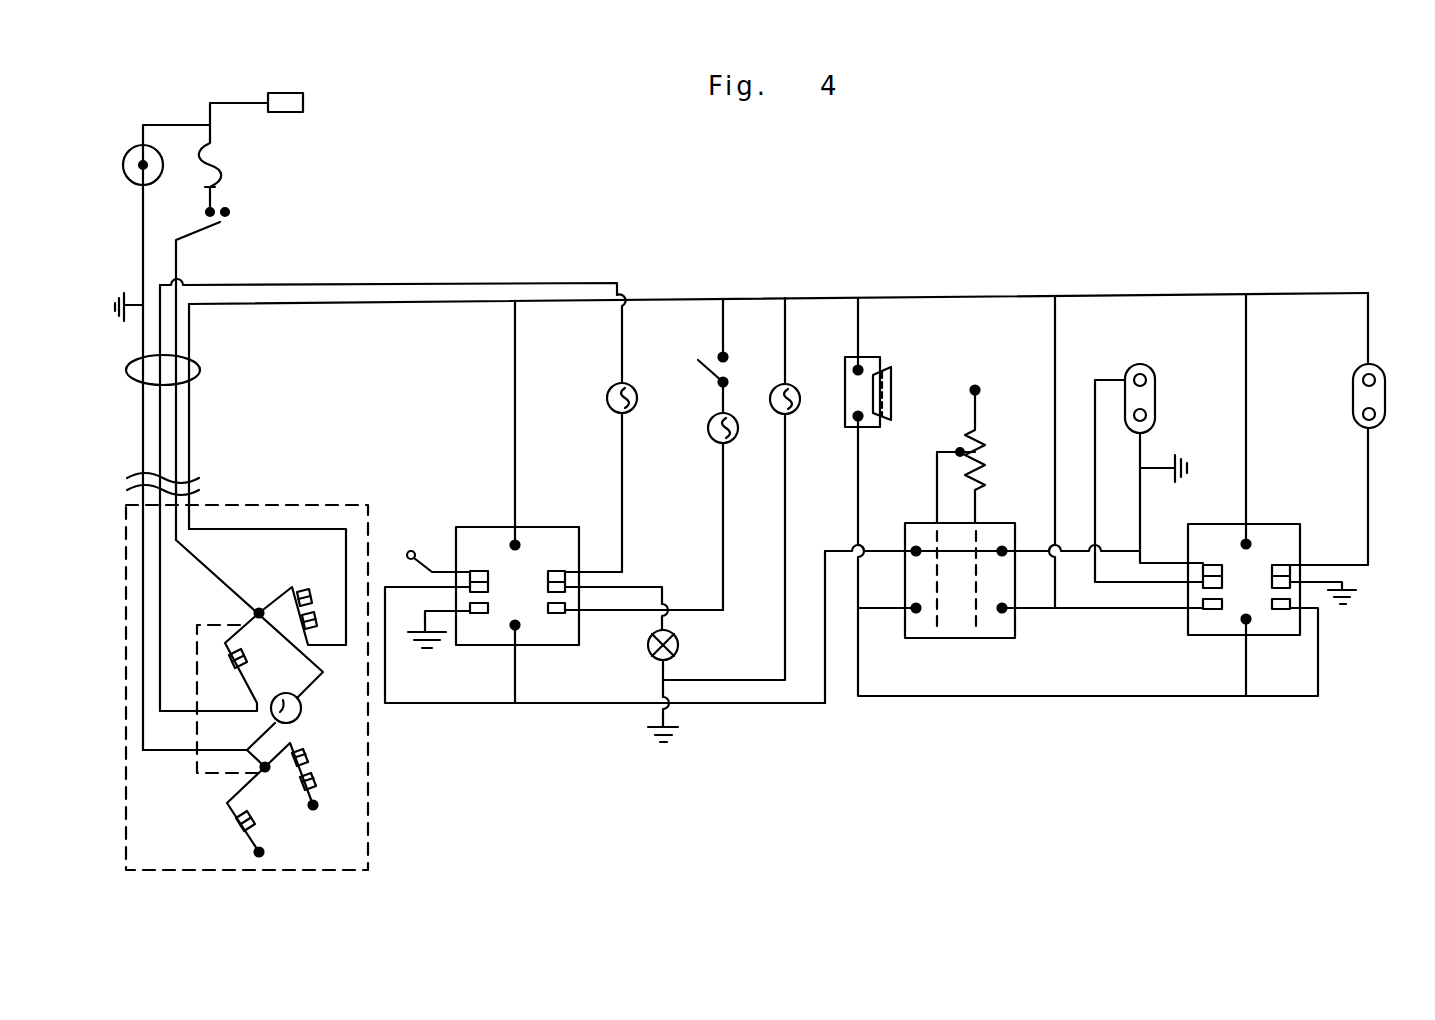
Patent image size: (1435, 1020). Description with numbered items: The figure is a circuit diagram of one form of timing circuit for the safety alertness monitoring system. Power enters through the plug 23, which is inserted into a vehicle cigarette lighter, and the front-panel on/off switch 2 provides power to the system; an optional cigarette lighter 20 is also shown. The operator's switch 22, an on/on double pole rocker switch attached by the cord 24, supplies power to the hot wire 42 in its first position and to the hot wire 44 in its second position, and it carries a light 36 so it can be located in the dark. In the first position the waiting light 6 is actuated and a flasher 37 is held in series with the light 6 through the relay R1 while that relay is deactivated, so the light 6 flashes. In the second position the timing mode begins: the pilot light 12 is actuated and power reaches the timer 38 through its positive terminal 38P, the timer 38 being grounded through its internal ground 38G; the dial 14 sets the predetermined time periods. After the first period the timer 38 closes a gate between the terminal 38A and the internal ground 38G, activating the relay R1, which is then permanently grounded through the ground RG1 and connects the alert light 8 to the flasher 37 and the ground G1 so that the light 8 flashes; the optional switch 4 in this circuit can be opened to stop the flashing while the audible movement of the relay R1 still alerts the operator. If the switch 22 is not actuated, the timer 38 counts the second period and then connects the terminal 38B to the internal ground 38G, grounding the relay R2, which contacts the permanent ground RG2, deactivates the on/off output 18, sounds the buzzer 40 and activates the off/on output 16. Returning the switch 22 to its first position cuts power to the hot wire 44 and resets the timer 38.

The on/off switch 2 is at (232, 213).
The on/off switch 4 is at (706, 358).
The flashing waiting light 6 is at (609, 388).
The flashing timing light 8 is at (708, 420).
The pilot light 12 is at (810, 404).
The dial 14 is at (955, 416).
The off/on receptacle 16 is at (1145, 366).
The on/off receptacle 18 is at (1352, 382).
The cigarette lighter 20 is at (129, 134).
The switch 22 is at (370, 847).
The plug 23 is at (303, 103).
The cord 24 is at (200, 368).
The light 36 is at (300, 716).
The flasher 37 is at (680, 645).
The timer 38 is at (955, 632).
The terminal 38A is at (916, 545).
The terminal 38B is at (916, 612).
The internal ground 38G is at (1003, 545).
The positive terminal 38P is at (1005, 612).
The alarm 40 is at (892, 330).
The hot wire 42 is at (459, 282).
The hot wire 44 is at (410, 310).
The relay R1 is at (533, 633).
The relay R2 is at (1222, 633).
The ground RG1 is at (413, 644).
The permanent ground RG2 is at (1342, 608).
The ground G1 is at (672, 740).